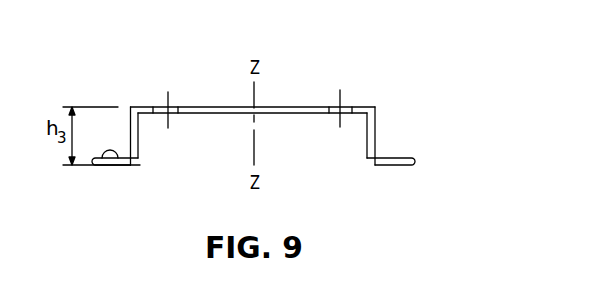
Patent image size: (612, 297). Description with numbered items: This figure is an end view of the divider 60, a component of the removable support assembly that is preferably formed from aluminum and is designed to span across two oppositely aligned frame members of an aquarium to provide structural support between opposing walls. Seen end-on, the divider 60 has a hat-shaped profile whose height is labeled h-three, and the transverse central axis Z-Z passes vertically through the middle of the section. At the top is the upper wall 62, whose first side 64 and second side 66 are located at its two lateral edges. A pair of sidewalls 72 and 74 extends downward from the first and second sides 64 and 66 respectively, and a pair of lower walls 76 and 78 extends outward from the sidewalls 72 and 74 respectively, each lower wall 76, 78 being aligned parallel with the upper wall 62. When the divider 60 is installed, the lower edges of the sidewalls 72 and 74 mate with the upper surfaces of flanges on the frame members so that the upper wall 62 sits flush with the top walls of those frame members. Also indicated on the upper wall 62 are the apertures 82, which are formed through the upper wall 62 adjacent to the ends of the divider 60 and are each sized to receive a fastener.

The divider 60 is at (406, 86).
The upper wall 62 is at (278, 106).
The first side 64 is at (130, 107).
The second side 66 is at (376, 107).
The sidewall 72 is at (130, 132).
The sidewall 74 is at (378, 122).
The lower wall 76 is at (119, 158).
The lower wall 78 is at (404, 157).
The aperture 82 is at (178, 107).